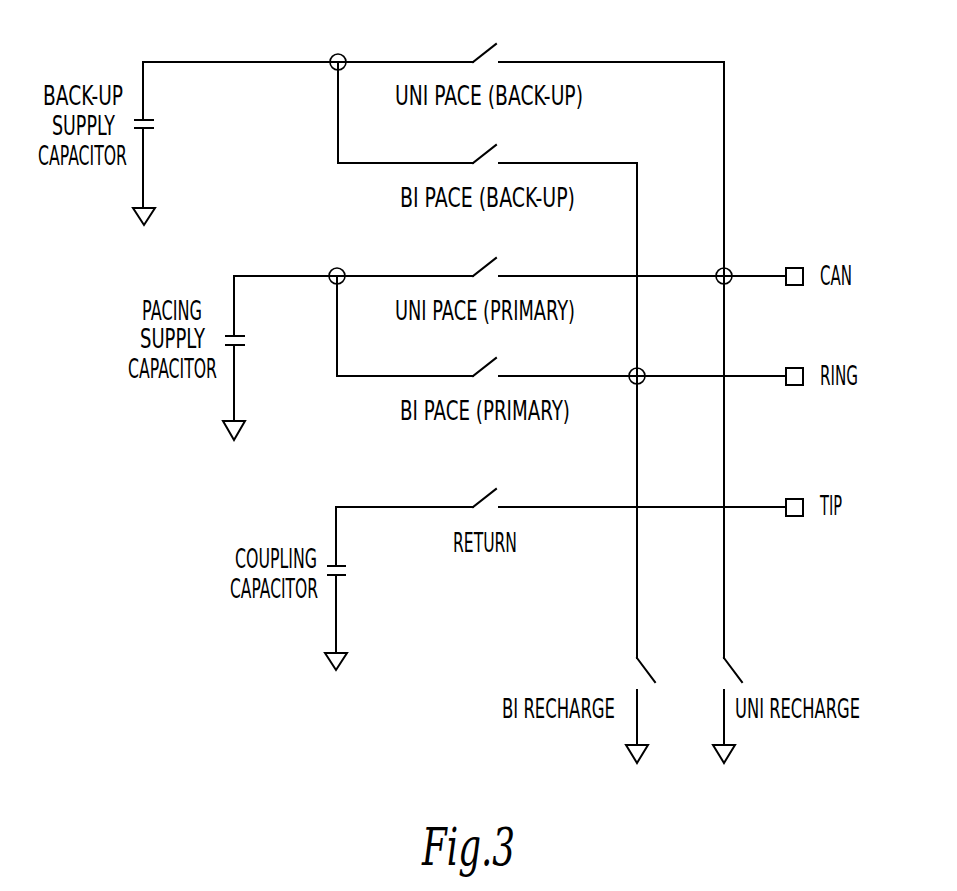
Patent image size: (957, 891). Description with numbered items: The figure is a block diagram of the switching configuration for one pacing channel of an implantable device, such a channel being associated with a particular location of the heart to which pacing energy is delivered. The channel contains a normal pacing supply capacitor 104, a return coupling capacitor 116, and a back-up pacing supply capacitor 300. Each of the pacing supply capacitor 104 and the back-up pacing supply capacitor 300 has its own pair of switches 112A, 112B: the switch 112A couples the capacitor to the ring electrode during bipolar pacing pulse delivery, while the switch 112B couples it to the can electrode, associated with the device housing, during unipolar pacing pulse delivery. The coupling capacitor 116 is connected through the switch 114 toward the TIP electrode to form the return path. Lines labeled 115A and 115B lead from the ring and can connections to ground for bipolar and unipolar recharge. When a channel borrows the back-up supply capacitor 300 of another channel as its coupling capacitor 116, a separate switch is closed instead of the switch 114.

The back-up pacing supply capacitor 300 is at (155, 125).
The pacing supply capacitor 104 is at (246, 341).
The return coupling capacitor 116 is at (347, 572).
The switch 112B is at (487, 53).
The switch 112A is at (487, 153).
The switch 114 is at (486, 499).
The bipolar recharge switch 115A is at (647, 671).
The unipolar recharge switch 115B is at (734, 671).